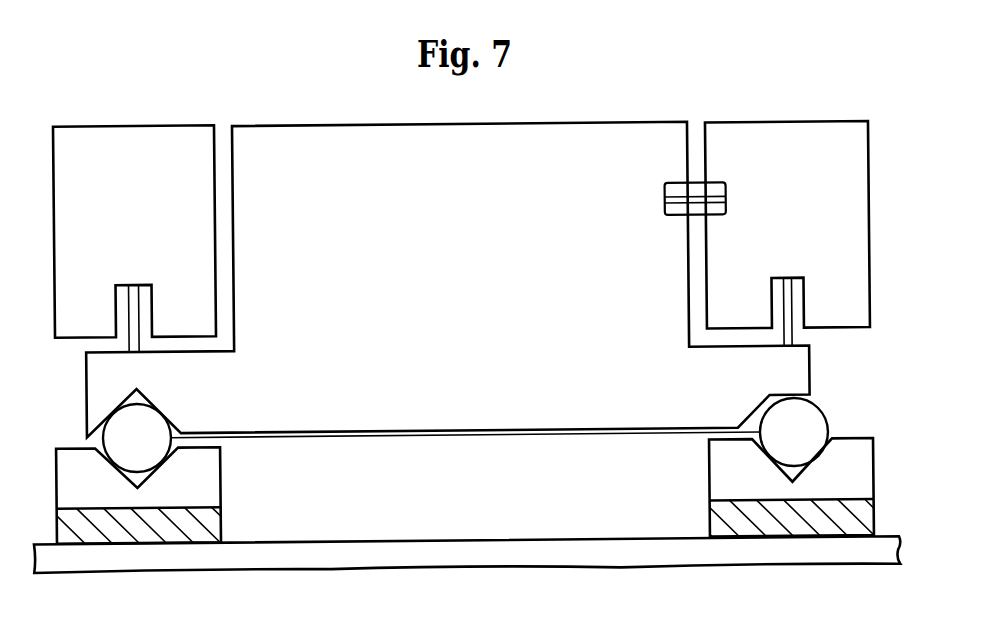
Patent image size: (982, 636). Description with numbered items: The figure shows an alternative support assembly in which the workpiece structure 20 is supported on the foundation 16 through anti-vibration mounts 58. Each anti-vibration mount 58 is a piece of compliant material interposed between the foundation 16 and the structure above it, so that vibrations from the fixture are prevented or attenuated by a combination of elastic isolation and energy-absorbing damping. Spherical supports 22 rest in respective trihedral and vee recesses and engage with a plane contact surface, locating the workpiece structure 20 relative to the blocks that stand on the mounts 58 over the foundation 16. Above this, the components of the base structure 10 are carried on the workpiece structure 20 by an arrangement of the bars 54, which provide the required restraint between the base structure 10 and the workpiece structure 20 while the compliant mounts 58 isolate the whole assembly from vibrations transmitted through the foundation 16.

The base structure 10 is at (821, 148).
The workpiece structure 20 is at (612, 141).
The spherical supports 22 is at (158, 438).
The bars 54 is at (787, 304).
The anti-vibration mounts 58 is at (207, 523).
The foundation 16 is at (623, 572).